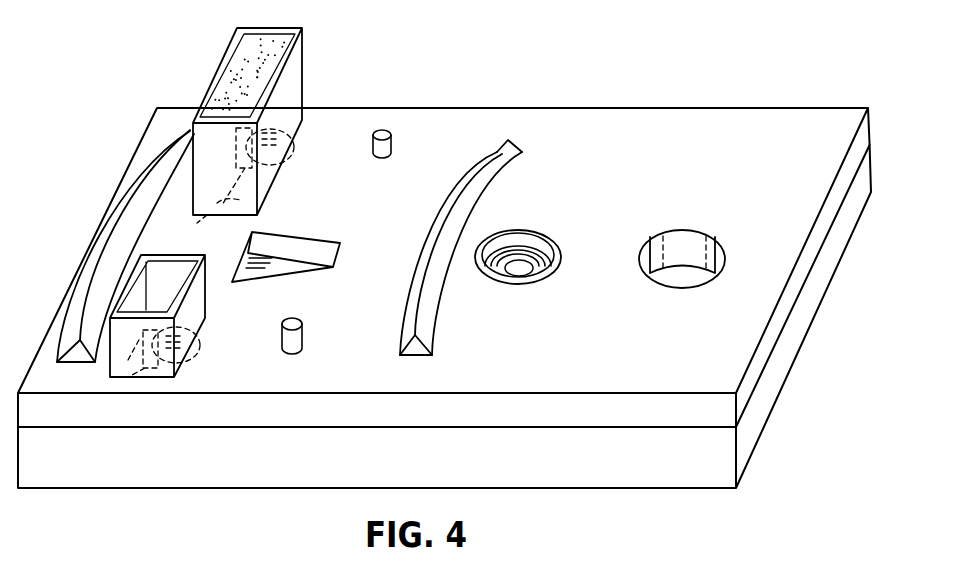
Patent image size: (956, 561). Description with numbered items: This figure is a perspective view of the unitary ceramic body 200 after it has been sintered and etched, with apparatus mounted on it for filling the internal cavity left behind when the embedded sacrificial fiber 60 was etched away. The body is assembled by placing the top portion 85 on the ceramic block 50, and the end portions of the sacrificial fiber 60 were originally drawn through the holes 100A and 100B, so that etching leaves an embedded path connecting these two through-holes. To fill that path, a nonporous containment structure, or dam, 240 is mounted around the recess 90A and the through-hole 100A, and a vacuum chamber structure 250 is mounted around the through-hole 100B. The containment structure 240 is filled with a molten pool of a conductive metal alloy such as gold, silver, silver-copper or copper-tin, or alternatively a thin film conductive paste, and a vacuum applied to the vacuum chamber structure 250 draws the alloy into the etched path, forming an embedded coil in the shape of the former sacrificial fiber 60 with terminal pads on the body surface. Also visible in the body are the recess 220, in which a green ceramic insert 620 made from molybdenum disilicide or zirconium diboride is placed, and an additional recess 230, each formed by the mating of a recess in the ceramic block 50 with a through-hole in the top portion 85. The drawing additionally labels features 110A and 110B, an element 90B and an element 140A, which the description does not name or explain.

The unitary ceramic body 200 is at (641, 83).
The top portion 85 is at (826, 108).
The ceramic block 50 is at (753, 420).
The curved guide ridge 110A is at (130, 206).
The curved guide ridge 110B is at (500, 143).
The through-hole 100A is at (157, 285).
The through-hole 100B is at (113, 379).
The nonporous containment structure (dam) 240 is at (304, 52).
The additional recess 230 is at (283, 265).
The vacuum chamber structure 250 is at (206, 300).
The sacrificial fiber 60 is at (292, 143).
The recess 90A is at (282, 148).
The connector 90B is at (186, 355).
The locating pin 140A is at (393, 143).
The green ceramic insert 620 is at (542, 238).
The recess 220 is at (543, 279).